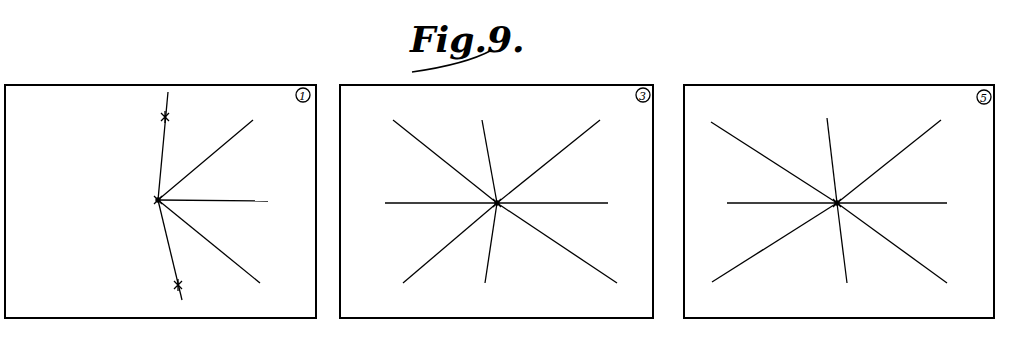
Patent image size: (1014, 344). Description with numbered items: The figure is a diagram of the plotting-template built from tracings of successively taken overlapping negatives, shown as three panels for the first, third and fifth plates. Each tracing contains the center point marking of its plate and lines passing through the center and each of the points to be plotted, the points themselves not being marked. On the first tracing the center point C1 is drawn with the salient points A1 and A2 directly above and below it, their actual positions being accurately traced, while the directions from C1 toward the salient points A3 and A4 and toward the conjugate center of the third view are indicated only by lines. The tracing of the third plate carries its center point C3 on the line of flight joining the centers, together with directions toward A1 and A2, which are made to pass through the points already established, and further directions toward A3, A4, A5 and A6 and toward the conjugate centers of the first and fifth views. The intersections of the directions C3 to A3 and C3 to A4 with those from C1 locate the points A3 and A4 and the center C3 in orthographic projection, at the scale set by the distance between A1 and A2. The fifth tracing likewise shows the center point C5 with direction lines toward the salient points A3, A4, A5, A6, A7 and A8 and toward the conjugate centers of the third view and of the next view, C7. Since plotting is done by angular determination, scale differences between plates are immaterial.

The salient point A1 is at (163, 118).
The salient point A2 is at (181, 286).
The salient point A3 is at (658, 161).
The salient point A4 is at (497, 241).
The salient point A5 is at (499, 160).
The salient point A6 is at (675, 243).
The salient point A7 is at (889, 161).
The salient point A8 is at (892, 243).
The center point C1 is at (158, 204).
The center point C3 is at (240, 212).
The center point C5 is at (575, 212).
The conjugate center C7 is at (914, 210).